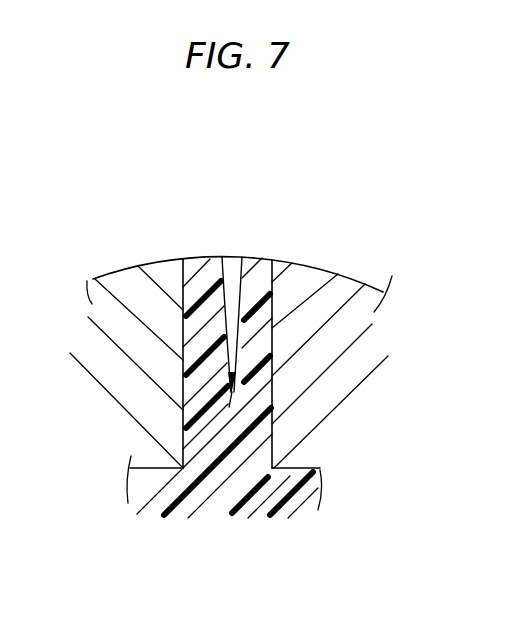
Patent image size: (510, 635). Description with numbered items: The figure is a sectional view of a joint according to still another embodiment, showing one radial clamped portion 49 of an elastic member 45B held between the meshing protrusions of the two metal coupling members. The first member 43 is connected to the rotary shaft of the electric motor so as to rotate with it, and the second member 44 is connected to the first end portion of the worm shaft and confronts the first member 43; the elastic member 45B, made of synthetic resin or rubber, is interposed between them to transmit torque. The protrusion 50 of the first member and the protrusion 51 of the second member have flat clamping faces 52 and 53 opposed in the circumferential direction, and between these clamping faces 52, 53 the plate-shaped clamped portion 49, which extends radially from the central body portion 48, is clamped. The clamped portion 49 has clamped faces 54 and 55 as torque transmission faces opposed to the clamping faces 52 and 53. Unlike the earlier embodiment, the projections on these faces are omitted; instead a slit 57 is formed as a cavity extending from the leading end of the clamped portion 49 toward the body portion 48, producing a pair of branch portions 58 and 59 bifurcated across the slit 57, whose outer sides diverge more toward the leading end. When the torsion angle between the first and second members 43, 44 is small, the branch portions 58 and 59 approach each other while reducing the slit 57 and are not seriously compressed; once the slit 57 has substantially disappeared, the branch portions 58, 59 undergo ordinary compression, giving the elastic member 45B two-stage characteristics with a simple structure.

The first member 43 is at (93, 275).
The second member 44 is at (366, 281).
The elastic member 45B is at (207, 261).
The body portion 48 is at (223, 497).
The clamped portion 49 is at (272, 445).
The protrusion 50 is at (128, 288).
The protrusion 51 is at (327, 288).
The clamping face 52 is at (182, 355).
The clamping face 53 is at (275, 360).
The clamped face 54 is at (182, 394).
The clamped face 55 is at (274, 393).
The slit 57 is at (235, 270).
The branch portion 58 is at (197, 280).
The branch portion 59 is at (255, 283).